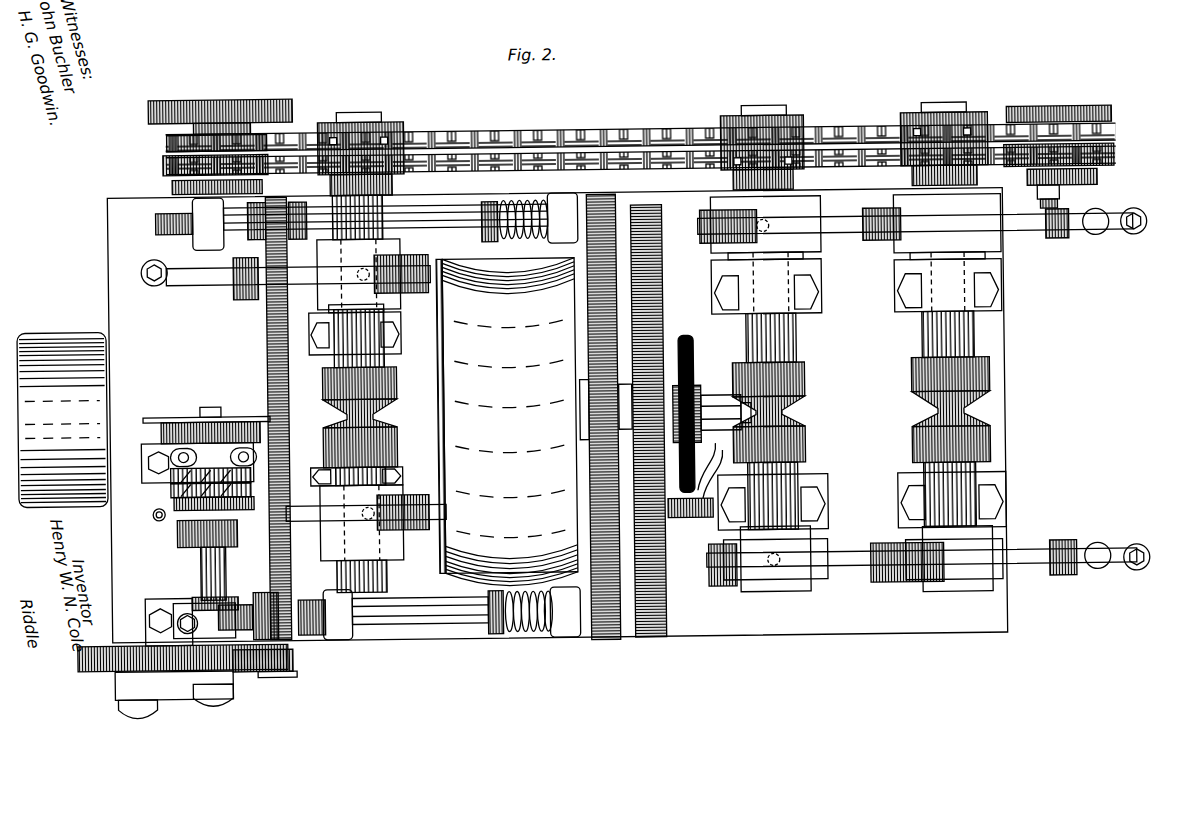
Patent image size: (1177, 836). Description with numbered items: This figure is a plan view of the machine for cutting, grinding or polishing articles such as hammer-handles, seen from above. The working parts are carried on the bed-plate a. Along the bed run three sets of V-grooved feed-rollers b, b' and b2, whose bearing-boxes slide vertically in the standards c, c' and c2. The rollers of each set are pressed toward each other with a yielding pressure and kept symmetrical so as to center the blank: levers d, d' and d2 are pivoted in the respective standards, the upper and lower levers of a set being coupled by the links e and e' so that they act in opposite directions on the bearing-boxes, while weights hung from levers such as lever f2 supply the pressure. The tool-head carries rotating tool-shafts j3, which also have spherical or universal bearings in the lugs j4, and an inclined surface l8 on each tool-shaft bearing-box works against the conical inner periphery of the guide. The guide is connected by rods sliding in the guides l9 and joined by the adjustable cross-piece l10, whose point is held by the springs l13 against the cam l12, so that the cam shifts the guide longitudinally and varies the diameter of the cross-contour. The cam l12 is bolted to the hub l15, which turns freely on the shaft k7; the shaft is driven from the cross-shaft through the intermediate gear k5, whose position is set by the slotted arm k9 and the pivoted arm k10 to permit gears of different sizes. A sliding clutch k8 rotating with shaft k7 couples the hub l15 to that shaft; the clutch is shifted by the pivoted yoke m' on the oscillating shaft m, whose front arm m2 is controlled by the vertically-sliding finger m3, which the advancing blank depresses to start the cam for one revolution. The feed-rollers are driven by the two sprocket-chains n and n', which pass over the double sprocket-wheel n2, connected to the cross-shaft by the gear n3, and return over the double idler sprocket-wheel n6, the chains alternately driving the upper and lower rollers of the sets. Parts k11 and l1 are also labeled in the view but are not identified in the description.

The bed-plate a is at (557, 415).
The feed-rollers b is at (939, 389).
The feed-rollers b' is at (782, 391).
The feed-rollers b2 is at (324, 378).
The standards c is at (950, 404).
The standards c' is at (771, 406).
The standards c2 is at (318, 400).
The levers d is at (1097, 388).
The levers d' is at (930, 392).
The levers d2 is at (190, 283).
The link e is at (1061, 392).
The link e' is at (822, 396).
The lever f2 is at (152, 514).
The tool-shafts j3 is at (684, 337).
The lugs j4 is at (696, 370).
The intermediate gear k5 is at (96, 648).
The shaft k7 is at (200, 570).
The sliding clutch k8 is at (173, 500).
The slotted arm k9 is at (172, 690).
The pivoted arm k10 is at (186, 690).
The drum k11 is at (62, 420).
The shaft l1 is at (446, 226).
The inclined surface l8 is at (400, 604).
The guides l9 is at (387, 417).
The cross-piece l10 is at (268, 330).
The cam l12 is at (166, 413).
The springs l13 is at (518, 200).
The hub l15 is at (170, 476).
The shaft m is at (690, 518).
The pivoted yoke m' is at (201, 569).
The arm m2 is at (711, 463).
The vertically-sliding finger m3 is at (724, 397).
The sprocket-chain n is at (649, 127).
The sprocket-chain n' is at (652, 169).
The double sprocket-wheel n2 is at (175, 170).
The gear n3 is at (296, 104).
The double idler sprocket-wheel n6 is at (1015, 116).